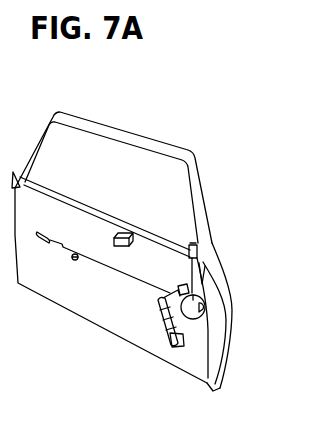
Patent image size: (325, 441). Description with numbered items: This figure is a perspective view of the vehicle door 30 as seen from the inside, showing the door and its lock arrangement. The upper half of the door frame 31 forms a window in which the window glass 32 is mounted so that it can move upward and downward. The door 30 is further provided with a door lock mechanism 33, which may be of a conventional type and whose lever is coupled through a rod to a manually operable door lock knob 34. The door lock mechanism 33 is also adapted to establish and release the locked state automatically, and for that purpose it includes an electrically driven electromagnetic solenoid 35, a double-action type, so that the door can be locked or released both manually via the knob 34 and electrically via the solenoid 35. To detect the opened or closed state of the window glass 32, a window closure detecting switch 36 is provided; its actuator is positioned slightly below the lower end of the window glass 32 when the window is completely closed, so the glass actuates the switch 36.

The door 30 is at (186, 143).
The door frame 31 is at (223, 264).
The window glass 32 is at (183, 178).
The door lock mechanism 33 is at (212, 298).
The door lock knob 34 is at (197, 247).
The electromagnetic solenoid 35 is at (152, 362).
The window closure detecting switch 36 is at (124, 232).